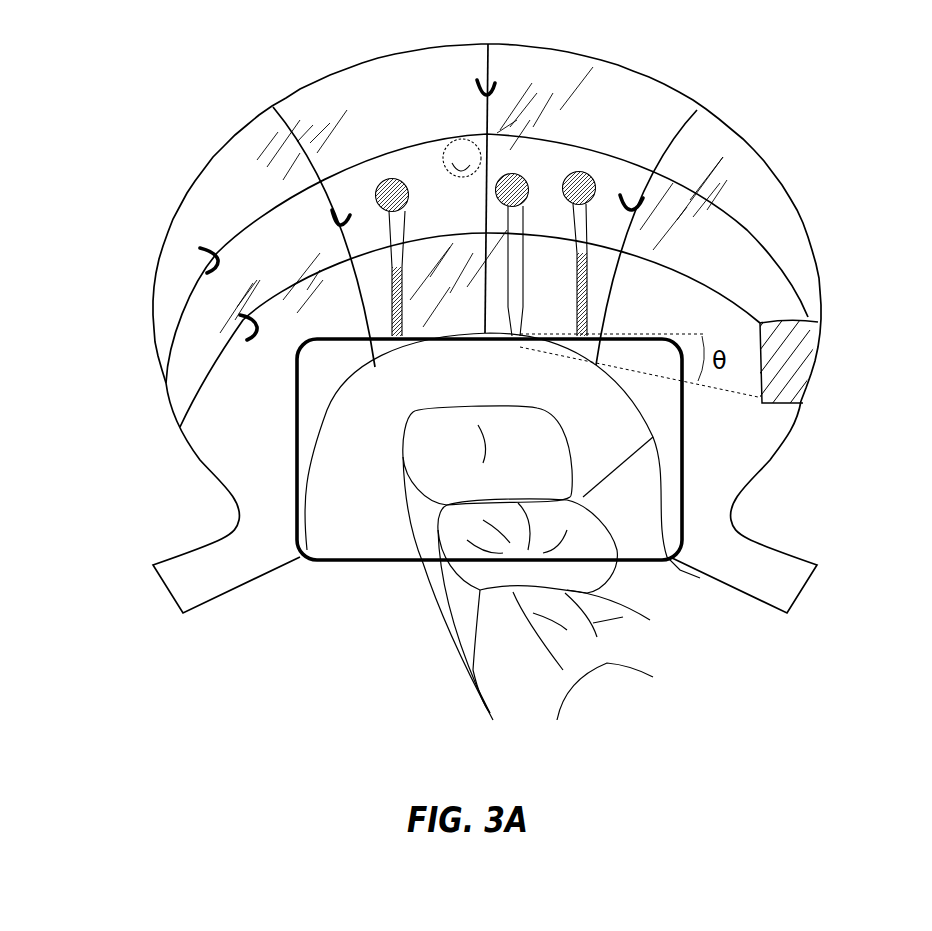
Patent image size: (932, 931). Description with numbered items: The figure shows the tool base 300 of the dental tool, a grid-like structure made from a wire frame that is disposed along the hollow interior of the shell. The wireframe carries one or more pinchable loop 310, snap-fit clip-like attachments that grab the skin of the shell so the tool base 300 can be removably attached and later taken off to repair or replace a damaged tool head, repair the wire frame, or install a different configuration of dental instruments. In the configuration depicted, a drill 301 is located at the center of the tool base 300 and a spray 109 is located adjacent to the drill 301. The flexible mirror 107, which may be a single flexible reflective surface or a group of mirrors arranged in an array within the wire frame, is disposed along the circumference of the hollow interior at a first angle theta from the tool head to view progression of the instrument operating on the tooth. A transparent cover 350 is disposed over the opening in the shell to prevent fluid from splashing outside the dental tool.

The tool base 300 is at (747, 229).
The pinchable loop 310 is at (475, 88).
The spray 109 is at (390, 268).
The drill 301 is at (473, 200).
The flexible mirror 107 is at (817, 352).
The transparent cover 350 is at (347, 561).